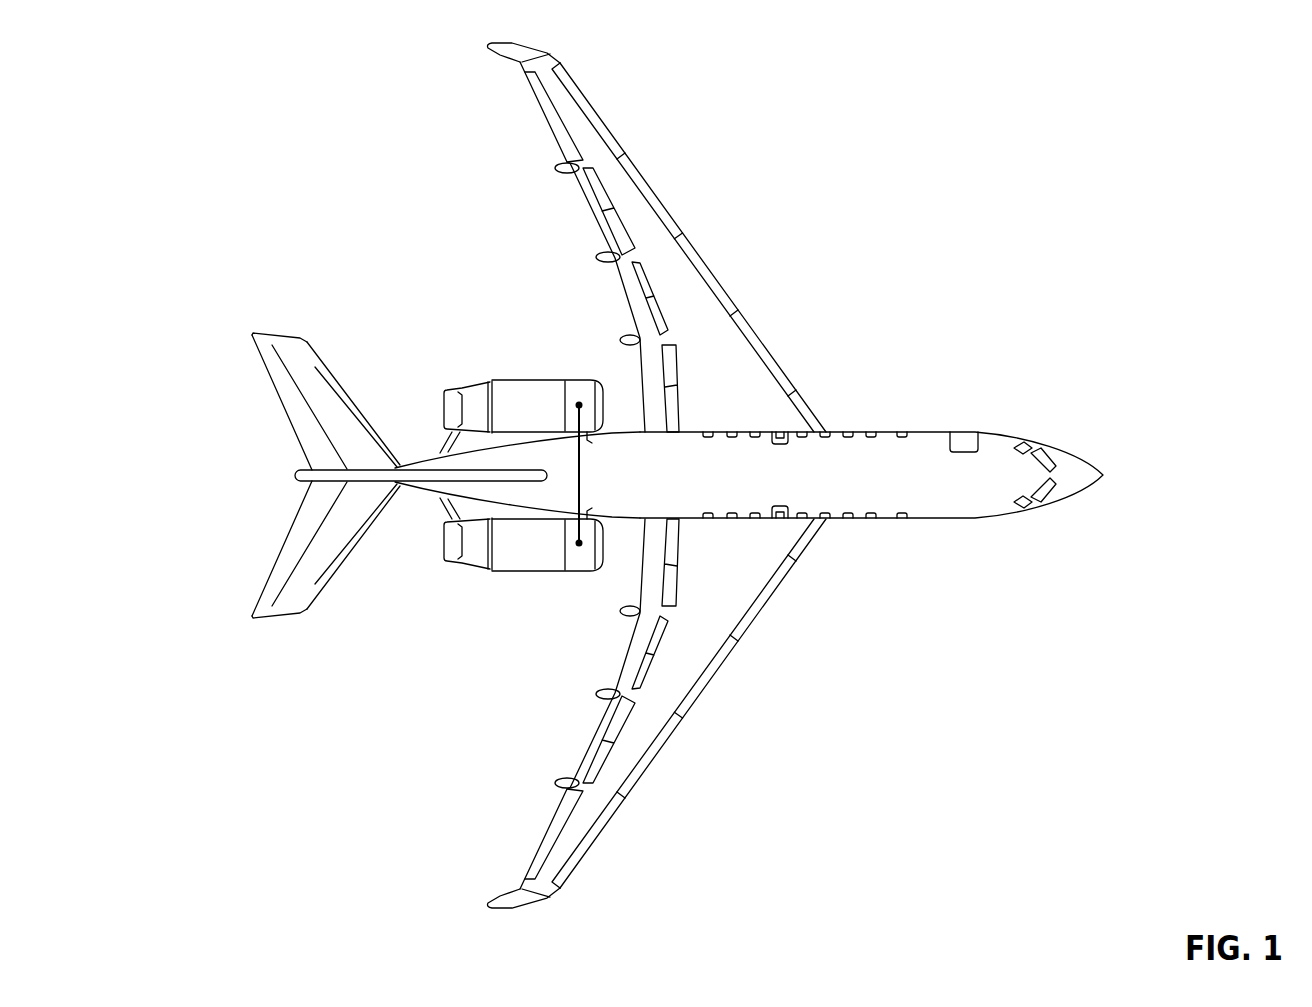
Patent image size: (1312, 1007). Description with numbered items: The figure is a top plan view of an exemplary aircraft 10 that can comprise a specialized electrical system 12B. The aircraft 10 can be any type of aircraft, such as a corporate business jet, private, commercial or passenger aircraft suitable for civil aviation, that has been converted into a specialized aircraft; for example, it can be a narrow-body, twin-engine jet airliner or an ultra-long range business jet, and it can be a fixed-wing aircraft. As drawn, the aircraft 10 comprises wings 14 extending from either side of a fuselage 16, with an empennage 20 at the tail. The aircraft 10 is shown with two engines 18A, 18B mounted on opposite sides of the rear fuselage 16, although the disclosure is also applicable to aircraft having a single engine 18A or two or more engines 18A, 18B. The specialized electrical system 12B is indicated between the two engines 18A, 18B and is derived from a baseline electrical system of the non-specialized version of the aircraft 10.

The aircraft 10 is at (1093, 155).
The specialized electrical system 12B is at (579, 475).
The wings 14 is at (772, 293).
The fuselage 16 is at (1003, 491).
The first engine 18A is at (520, 390).
The second engine 18B is at (520, 560).
The empennage 20 is at (258, 466).